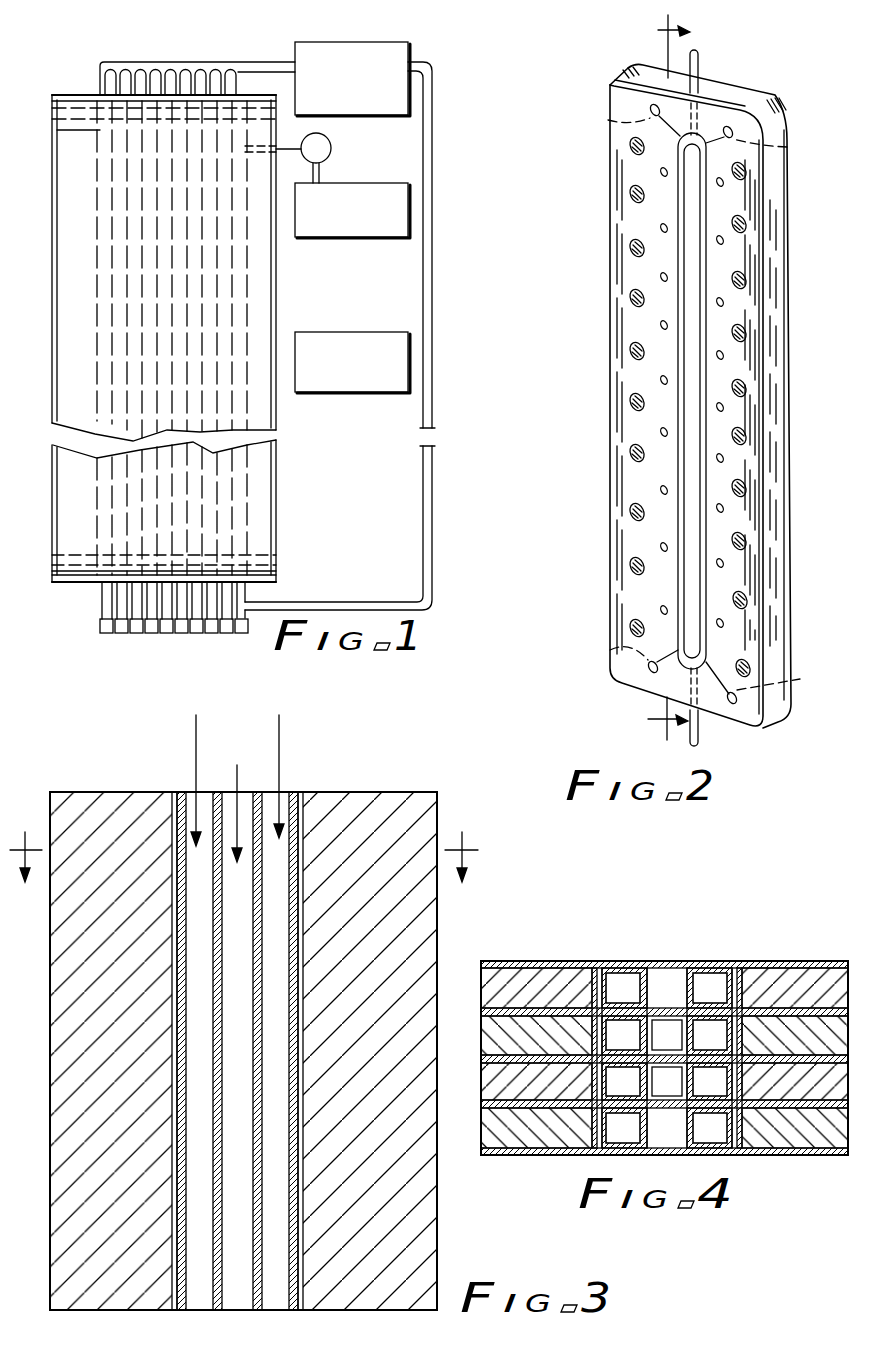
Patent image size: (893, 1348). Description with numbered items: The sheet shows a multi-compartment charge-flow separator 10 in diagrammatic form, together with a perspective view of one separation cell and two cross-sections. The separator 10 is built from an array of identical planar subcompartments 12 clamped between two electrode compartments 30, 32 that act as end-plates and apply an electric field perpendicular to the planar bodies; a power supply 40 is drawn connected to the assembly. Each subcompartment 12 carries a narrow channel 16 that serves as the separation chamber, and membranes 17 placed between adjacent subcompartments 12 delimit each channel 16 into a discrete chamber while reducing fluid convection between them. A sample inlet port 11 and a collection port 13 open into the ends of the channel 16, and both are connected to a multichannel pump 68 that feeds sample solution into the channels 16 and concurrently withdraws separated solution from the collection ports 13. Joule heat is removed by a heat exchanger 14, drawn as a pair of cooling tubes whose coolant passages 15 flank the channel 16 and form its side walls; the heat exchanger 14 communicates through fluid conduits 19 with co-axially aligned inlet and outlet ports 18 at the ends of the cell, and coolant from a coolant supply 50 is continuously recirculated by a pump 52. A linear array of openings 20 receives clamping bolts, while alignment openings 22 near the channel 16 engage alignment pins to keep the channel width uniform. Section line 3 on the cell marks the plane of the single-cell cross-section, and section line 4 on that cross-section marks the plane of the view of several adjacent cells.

In FIG. 2, the section line 3— 3 is at (656, 377).
In FIG. 3, the section line 4- 4 is at (34, 829).
In FIG. 1, the multi-compartment charge-flow separator 10 is at (316, 471).
In FIG. 1, the sample inlet port 11 is at (100, 80).
In FIG. 2, the sample inlet port 11 is at (700, 65).
In FIG. 1, the subcompartment 12 is at (291, 283).
In FIG. 3, the subcompartment 12 is at (130, 1119).
In FIG. 4, the subcompartment 12 is at (556, 999).
In FIG. 1, the collection port 13 is at (247, 592).
In FIG. 2, the collection port 13 is at (699, 744).
In FIG. 2, the heat exchanger 14 is at (707, 268).
In FIG. 3, the heat exchanger 14 is at (174, 791).
In FIG. 4, the heat exchanger 14 is at (586, 978).
In FIG. 3, the water channel 15 is at (214, 1054).
In FIG. 4, the water channel 15 is at (633, 999).
In FIG. 2, the channel 16 is at (698, 201).
In FIG. 3, the channel 16 is at (252, 1054).
In FIG. 4, the channel 16 is at (680, 999).
In FIG. 4, the membranes 17 is at (482, 966).
In FIG. 2, the inlet and outlet ports 18 is at (650, 112).
In FIG. 2, the fluid conduit 19 is at (608, 122).
In FIG. 2, the openings 20 is at (632, 193).
In FIG. 2, the alignment openings 22 is at (661, 326).
In FIG. 1, the electrode compartment 30 is at (265, 523).
In FIG. 1, the electrode compartment 32 is at (70, 583).
In FIG. 1, the power supply / electrode connector 40 is at (364, 332).
In FIG. 1, the coolant supply 50 is at (370, 237).
In FIG. 1, the pump 52 is at (331, 148).
In FIG. 1, the multi-channel pump 68 is at (310, 42).